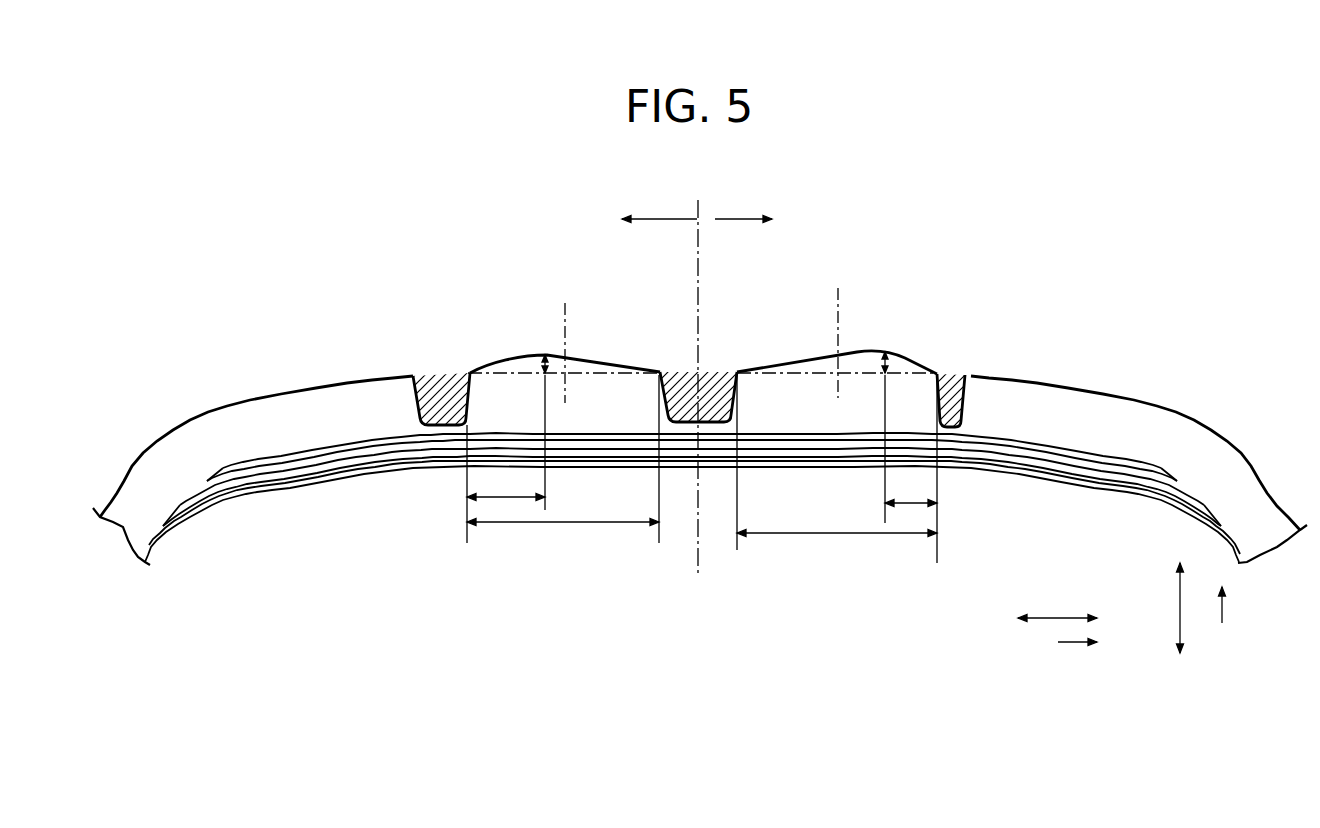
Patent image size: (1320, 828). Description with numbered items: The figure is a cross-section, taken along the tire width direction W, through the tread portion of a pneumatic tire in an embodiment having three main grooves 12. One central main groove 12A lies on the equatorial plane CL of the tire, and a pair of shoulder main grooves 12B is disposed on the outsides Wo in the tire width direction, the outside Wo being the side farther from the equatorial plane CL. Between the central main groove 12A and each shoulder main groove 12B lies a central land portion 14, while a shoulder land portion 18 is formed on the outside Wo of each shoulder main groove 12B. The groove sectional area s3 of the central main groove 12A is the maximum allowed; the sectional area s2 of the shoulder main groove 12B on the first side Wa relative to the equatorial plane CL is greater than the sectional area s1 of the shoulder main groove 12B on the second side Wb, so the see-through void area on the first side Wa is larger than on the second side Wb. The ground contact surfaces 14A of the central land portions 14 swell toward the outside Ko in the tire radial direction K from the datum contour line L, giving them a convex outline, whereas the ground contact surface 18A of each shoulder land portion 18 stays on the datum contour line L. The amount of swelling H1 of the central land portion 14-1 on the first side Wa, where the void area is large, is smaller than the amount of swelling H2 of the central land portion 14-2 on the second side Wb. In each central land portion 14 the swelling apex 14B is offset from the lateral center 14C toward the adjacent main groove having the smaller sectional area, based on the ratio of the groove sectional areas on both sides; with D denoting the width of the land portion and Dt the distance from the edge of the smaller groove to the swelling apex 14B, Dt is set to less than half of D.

The shoulder land portion 18 is at (377, 390).
The ground contact surface of shoulder land portion 18A is at (1085, 388).
The central land portion 14 is at (702, 319).
The central land portion on first side 14-1 is at (577, 362).
The central land portion on second side 14-2 is at (797, 393).
The ground contact surface of central land portion 14A is at (603, 357).
The swelling apex 14B is at (543, 353).
The lateral center of land portion 14C is at (560, 318).
The amount of swelling of first-side central land portion H1 is at (543, 363).
The amount of swelling of second-side central land portion H2 is at (893, 363).
The groove sectional area of second-side shoulder main groove s1 is at (957, 400).
The groove sectional area of first-side shoulder main groove s2 is at (437, 402).
The groove sectional area of central main groove s3 is at (678, 397).
The datum contour line L is at (435, 375).
The main groove 12 is at (692, 527).
The central main groove 12A is at (688, 425).
The shoulder main groove 12B is at (437, 418).
The dimension of land portion in tire width direction D is at (563, 522).
The distance from small-groove edge to swelling apex Dt is at (507, 497).
The equatorial plane of the tire CL is at (697, 572).
The first side Wa is at (659, 204).
The second side Wb is at (743, 204).
The tire width direction W is at (1057, 604).
The outside in tire width direction Wo is at (1077, 659).
The tire radial direction K is at (1191, 608).
The outside in tire radial direction Ko is at (1241, 605).